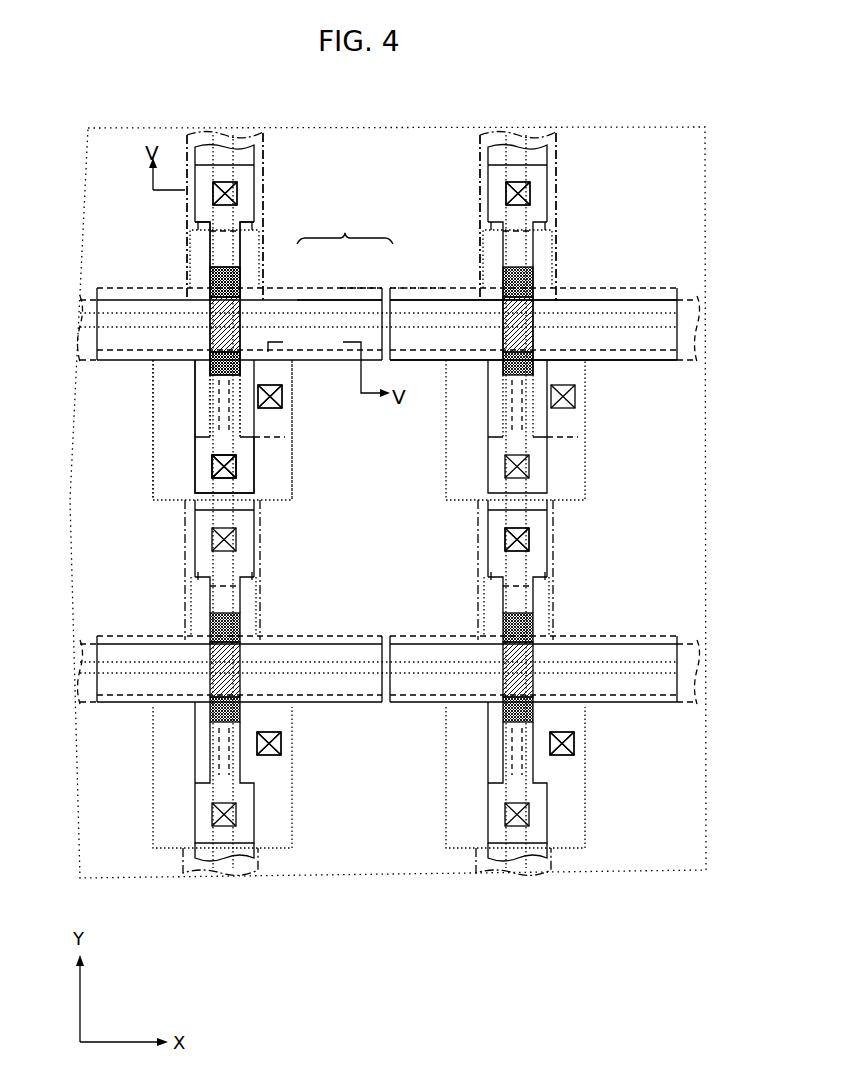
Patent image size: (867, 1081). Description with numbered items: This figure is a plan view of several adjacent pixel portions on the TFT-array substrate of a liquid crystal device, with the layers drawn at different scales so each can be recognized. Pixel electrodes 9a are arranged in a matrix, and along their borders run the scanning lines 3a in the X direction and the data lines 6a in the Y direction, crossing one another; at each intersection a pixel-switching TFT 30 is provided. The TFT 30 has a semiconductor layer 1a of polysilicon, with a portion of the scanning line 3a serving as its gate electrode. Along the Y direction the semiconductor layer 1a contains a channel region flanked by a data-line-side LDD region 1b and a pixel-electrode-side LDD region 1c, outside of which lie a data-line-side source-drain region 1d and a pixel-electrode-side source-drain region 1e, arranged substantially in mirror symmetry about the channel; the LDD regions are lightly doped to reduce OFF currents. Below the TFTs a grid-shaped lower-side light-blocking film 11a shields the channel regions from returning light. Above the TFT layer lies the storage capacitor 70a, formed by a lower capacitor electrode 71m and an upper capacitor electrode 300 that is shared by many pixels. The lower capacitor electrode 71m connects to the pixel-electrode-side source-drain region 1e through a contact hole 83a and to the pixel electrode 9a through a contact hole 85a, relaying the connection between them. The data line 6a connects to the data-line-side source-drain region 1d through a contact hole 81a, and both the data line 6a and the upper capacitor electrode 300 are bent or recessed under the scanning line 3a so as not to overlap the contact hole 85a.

The semiconductor layer 1a is at (250, 420).
The data-line-side LDD region 1b is at (210, 280).
The pixel-electrode-side LDD region 1c is at (215, 373).
The data-line-side source-drain region 1d is at (210, 245).
The pixel-electrode-side source-drain region 1e is at (212, 412).
The scanning line 3a is at (437, 365).
The data line 6a is at (263, 165).
The pixel electrode 9a is at (536, 200).
The lower-side light-blocking film 11a is at (432, 288).
The TFT 30 is at (192, 322).
The storage capacitor 70a is at (345, 228).
The lower capacitor electrode 71m is at (360, 287).
The upper capacitor electrode 300 is at (312, 287).
The contact hole 81a is at (222, 184).
The contact hole 83a is at (206, 466).
The contact hole 85a is at (283, 395).